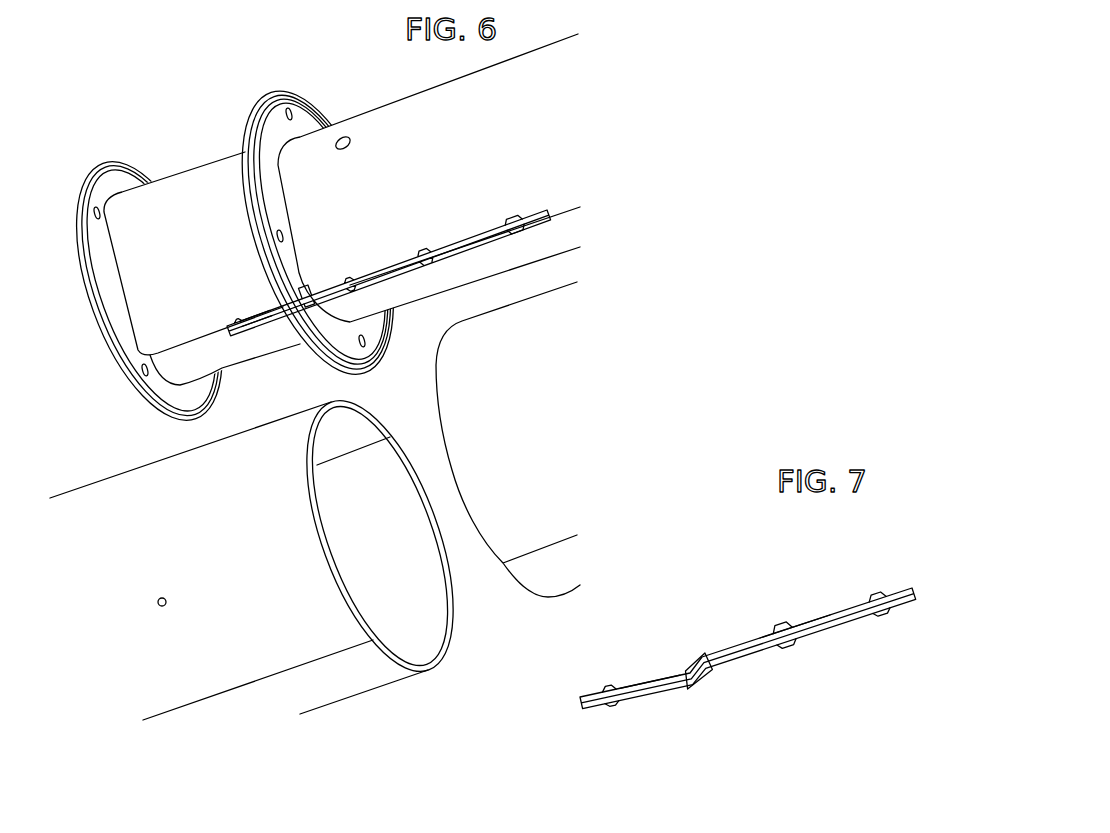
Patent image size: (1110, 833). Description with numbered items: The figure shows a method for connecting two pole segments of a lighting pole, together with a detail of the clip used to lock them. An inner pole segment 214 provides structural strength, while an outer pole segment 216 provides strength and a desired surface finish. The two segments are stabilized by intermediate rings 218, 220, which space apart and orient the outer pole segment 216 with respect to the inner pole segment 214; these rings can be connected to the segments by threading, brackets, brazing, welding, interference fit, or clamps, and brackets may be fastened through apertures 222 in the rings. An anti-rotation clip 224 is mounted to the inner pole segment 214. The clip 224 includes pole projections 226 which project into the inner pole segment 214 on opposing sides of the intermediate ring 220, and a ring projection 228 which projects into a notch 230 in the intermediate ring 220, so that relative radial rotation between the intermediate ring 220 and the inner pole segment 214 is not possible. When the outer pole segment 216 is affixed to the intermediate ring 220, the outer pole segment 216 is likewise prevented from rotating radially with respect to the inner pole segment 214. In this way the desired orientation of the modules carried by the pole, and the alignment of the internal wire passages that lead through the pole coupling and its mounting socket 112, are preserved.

In FIG. 6, the mounting socket 112 is at (640, 0).
In FIG. 6, the inner pole segment 214 is at (500, 133).
In FIG. 6, the outer pole segment 216 is at (247, 531).
In FIG. 6, the intermediate ring 218 is at (122, 176).
In FIG. 6, the intermediate ring 220 is at (312, 114).
In FIG. 6, the apertures 222 is at (268, 116).
In FIG. 6, the anti-rotation clip 224 is at (420, 237).
In FIG. 7, the anti-rotation clip 224 is at (732, 605).
In FIG. 6, the pole projections 226 is at (540, 203).
In FIG. 7, the pole projections 226 is at (878, 580).
In FIG. 6, the ring projection 228 is at (262, 298).
In FIG. 7, the ring projection 228 is at (843, 636).
In FIG. 6, the notch 230 is at (304, 279).